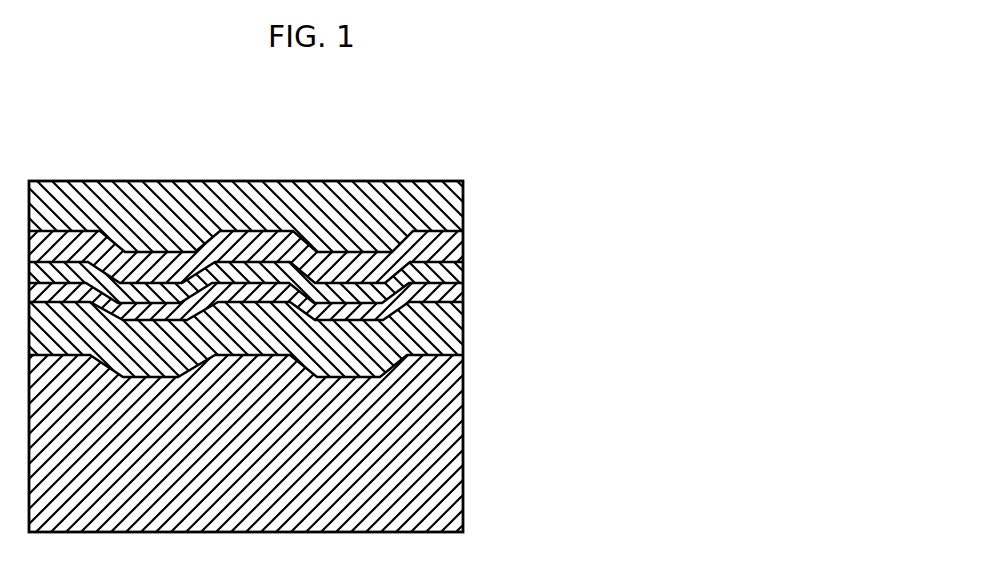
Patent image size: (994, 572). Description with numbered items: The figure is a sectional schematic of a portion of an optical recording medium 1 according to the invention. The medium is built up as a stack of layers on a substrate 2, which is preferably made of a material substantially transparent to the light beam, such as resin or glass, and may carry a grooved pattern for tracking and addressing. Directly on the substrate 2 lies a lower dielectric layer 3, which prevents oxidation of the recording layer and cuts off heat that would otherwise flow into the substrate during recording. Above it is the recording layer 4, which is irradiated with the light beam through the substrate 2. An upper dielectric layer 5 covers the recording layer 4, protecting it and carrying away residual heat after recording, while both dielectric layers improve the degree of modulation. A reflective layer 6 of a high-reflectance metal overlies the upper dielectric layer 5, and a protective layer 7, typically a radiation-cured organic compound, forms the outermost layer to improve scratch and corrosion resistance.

The optical recording medium 1 is at (486, 519).
The substrate 2 is at (463, 427).
The lower dielectric layer 3 is at (463, 325).
The recording layer 4 is at (463, 297).
The upper dielectric layer 5 is at (463, 273).
The reflective layer 6 is at (463, 245).
The protective layer 7 is at (463, 203).